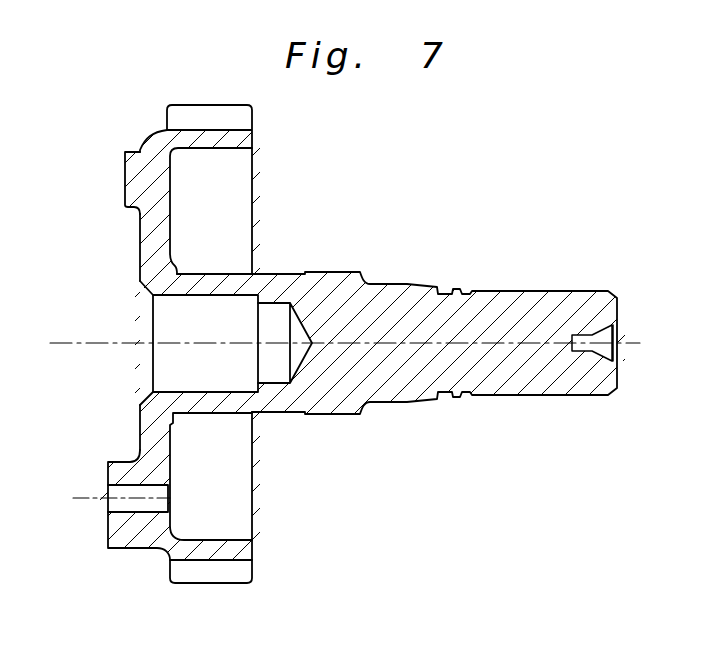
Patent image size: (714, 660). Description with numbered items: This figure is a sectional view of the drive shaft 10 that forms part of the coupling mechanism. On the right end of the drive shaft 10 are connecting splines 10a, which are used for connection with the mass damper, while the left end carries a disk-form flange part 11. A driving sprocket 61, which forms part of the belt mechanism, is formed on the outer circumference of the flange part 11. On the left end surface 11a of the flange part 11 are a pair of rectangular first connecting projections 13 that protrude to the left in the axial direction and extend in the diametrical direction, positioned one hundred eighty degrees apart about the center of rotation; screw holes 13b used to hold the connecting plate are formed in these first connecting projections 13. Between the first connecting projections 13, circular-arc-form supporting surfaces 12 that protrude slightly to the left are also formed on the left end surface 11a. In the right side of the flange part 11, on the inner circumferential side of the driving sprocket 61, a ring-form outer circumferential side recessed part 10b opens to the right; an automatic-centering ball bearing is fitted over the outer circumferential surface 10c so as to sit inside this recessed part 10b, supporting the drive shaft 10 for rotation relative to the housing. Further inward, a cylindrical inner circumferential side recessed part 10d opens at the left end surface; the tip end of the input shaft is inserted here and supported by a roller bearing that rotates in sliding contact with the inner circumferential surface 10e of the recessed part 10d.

The drive shaft 10 is at (518, 220).
The connecting splines 10a is at (533, 394).
The outer circumferential side recessed part 10b is at (215, 187).
The outer circumferential surface 10c is at (223, 273).
The inner circumferential side recessed part 10d is at (167, 367).
The inner circumferential surface 10e is at (183, 295).
The flange part 11 is at (148, 232).
The left end surface 11a is at (140, 263).
The supporting surfaces 12 is at (123, 177).
The first connecting projections 13 is at (122, 535).
The screw holes 13b is at (107, 503).
The driving sprocket 61 is at (215, 573).